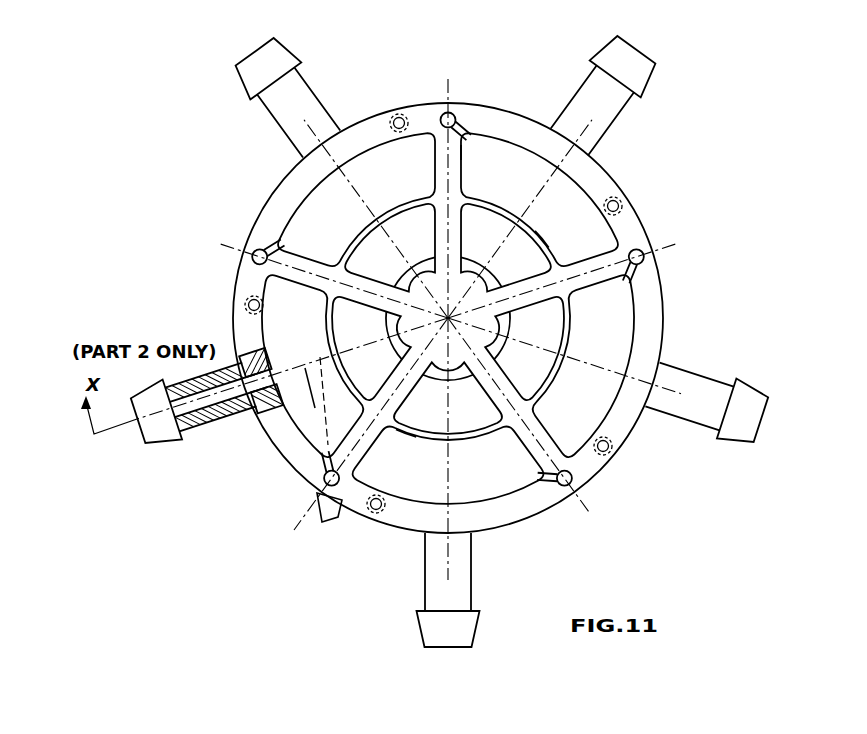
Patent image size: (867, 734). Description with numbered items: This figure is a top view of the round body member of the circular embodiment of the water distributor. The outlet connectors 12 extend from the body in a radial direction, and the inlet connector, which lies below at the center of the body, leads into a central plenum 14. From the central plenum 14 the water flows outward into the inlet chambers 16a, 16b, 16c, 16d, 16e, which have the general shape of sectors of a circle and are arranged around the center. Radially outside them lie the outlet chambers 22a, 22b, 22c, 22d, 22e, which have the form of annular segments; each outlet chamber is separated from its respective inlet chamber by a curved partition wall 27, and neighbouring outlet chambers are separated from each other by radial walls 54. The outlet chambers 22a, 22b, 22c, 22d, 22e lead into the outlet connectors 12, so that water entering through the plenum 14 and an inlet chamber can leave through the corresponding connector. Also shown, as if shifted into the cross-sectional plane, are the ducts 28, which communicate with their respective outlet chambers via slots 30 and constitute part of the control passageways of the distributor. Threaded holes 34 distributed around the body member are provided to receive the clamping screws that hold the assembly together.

The outlet connector 12 is at (190, 427).
The central plenum 14 is at (484, 291).
The inlet chamber 16a is at (408, 266).
The inlet chamber 16b is at (383, 352).
The inlet chamber 16c is at (472, 420).
The inlet chamber 16d is at (547, 356).
The inlet chamber 16e is at (515, 266).
The outlet chamber 22a is at (362, 219).
The outlet chamber 22b is at (322, 362).
The outlet chamber 22c is at (473, 490).
The outlet chamber 22d is at (610, 394).
The outlet chamber 22e is at (552, 196).
The curved partition wall 27 is at (543, 238).
The duct 28 is at (252, 261).
The slot 30 is at (262, 247).
The threaded hole 34 is at (624, 203).
The radial wall 54 is at (462, 150).